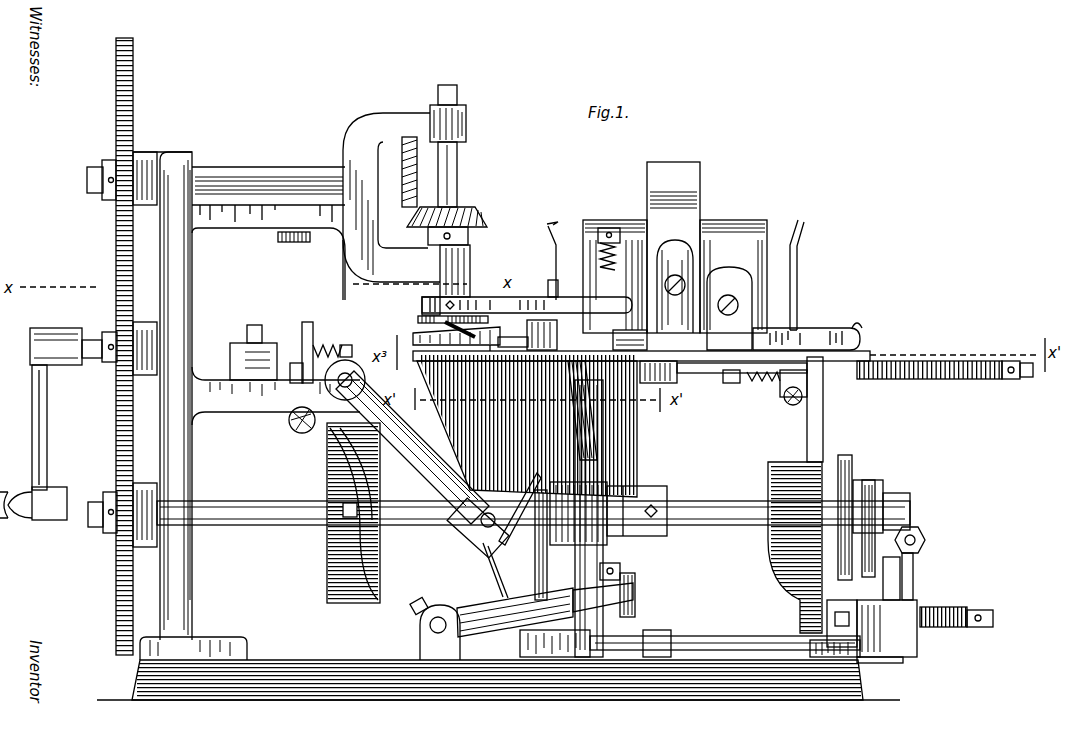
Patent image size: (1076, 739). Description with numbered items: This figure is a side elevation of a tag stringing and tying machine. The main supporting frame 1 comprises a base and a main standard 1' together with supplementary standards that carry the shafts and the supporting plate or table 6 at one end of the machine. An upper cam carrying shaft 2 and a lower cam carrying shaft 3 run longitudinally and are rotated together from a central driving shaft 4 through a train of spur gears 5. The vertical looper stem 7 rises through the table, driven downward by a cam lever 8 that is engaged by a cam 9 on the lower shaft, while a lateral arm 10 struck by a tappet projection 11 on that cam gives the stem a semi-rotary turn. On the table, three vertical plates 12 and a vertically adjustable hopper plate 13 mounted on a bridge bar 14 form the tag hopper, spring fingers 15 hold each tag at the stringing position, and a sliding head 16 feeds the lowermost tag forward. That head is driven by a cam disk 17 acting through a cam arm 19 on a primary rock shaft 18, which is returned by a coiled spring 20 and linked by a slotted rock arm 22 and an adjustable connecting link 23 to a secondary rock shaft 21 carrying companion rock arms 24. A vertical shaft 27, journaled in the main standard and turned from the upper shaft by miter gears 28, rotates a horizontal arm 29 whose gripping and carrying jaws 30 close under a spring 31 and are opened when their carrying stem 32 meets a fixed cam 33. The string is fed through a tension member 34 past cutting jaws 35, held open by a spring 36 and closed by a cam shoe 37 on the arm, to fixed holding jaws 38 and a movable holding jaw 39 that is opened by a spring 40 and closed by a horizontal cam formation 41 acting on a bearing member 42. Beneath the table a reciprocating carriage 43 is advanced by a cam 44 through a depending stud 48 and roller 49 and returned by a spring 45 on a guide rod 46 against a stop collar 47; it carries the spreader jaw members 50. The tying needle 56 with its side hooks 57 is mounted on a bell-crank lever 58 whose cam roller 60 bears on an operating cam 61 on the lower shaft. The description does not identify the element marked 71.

The main supporting frame 1 is at (498, 692).
The main standard 1' is at (246, 406).
The upper cam carrying shaft 2 is at (257, 168).
The lower cam carrying shaft 3 is at (241, 525).
The driving shaft 4 is at (92, 360).
The train of spur gears 5 is at (115, 273).
The supporting plate or table 6 is at (487, 362).
The looper stem 7 is at (588, 532).
The cam lever 8 is at (521, 601).
The cam 9 is at (633, 568).
The lateral arm 10 is at (596, 548).
The cam or tappet projection 11 is at (620, 592).
The vertical plates 12 is at (740, 222).
The adjustable hopper plate 13 is at (692, 188).
The bridge bar 14 is at (818, 328).
The spring fingers 15 is at (729, 308).
The sliding head 16 is at (744, 383).
The cam disk 17 is at (852, 466).
The primary rock shaft 18 is at (980, 628).
The cam arm 19 is at (862, 588).
The coiled spring 20 is at (946, 628).
The secondary rock shaft 21 is at (703, 646).
The slotted rock arm 22 is at (920, 582).
The adjustable connecting link 23 is at (925, 562).
The companion rock arms 24 is at (824, 395).
The vertical shaft 27 is at (456, 165).
The miter gears 28 is at (444, 182).
The horizontal arm 29 is at (476, 297).
The string gripping and carrying jaws 30 is at (630, 337).
The spring 31 is at (621, 256).
The carrying stem 32 is at (612, 228).
The fixed cam or incline 33 is at (297, 243).
The tension member or guide 34 is at (247, 340).
The cutting jaws 35 is at (310, 342).
The spring 36 is at (323, 388).
The cam shoe 37 is at (527, 308).
The fixed holding jaws 38 is at (538, 352).
The movable holding jaw 39 is at (542, 285).
The spring 40 is at (418, 320).
The horizontal cam formation 41 is at (445, 322).
The bearing member 42 is at (456, 348).
The reciprocating carriage 43 is at (728, 385).
The cam 44 is at (775, 470).
The spring 45 is at (932, 380).
The guide rod 46 is at (1032, 386).
The adjustable stop collar 47 is at (1008, 385).
The depending stud 48 is at (788, 398).
The bearing disk or roller 49 is at (792, 406).
The jaw members 50 is at (700, 385).
The tying stem or needle 56 is at (489, 528).
The hooks or prongs 57 is at (523, 492).
The bell-crank lever 58 is at (404, 440).
The cam roller 60 is at (306, 433).
The operating cam 61 is at (340, 455).
The brace 71 is at (586, 410).